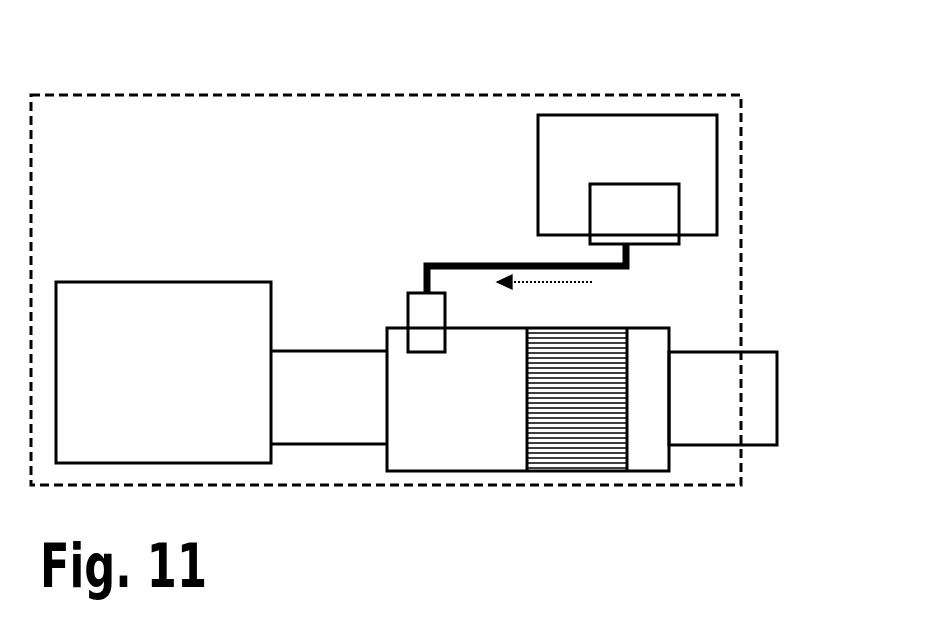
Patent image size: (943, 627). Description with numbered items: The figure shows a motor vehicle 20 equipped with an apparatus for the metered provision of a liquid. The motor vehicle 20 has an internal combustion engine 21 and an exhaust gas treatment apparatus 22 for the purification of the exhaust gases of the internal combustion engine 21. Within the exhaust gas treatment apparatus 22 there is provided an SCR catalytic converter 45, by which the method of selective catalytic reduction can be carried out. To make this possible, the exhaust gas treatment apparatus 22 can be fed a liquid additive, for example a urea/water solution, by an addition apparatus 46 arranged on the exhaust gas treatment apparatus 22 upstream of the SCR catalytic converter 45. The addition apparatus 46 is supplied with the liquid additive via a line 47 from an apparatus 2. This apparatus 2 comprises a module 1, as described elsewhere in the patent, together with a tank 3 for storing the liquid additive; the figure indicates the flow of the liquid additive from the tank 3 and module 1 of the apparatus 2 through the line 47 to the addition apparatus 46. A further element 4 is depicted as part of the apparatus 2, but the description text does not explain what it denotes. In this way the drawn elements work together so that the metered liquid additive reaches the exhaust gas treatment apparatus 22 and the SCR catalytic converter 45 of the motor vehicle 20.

The motor vehicle 20 is at (748, 82).
The internal combustion engine 21 is at (173, 281).
The exhaust gas treatment apparatus 22 is at (387, 328).
The SCR catalytic converter 45 is at (527, 443).
The addition apparatus 46 is at (407, 293).
The line 47 is at (450, 265).
The control device 4 is at (538, 117).
The apparatus 2 is at (533, 172).
The module 1 is at (590, 205).
The tank 3 is at (577, 283).